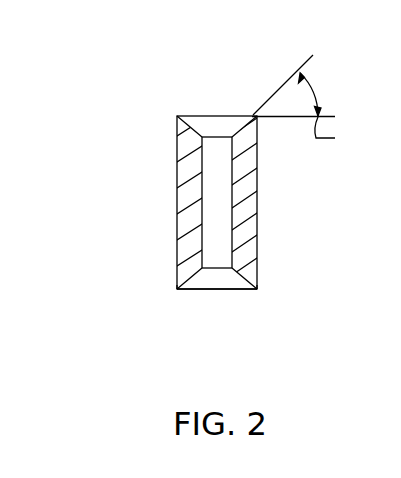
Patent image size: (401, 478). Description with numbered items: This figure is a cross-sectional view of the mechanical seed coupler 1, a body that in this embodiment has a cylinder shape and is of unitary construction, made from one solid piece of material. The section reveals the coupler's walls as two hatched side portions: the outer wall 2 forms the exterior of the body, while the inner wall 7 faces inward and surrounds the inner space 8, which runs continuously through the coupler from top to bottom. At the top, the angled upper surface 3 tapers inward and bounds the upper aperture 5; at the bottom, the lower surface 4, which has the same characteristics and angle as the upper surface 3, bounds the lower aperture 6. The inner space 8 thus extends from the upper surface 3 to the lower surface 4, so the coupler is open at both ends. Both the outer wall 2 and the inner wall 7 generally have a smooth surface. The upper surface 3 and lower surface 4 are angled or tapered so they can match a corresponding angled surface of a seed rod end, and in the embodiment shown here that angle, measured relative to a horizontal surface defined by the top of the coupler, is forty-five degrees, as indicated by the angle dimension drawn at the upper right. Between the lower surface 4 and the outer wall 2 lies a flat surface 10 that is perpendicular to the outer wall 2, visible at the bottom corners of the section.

The mechanical seed coupler 1 is at (163, 192).
The outer wall 2 is at (177, 228).
The upper surface 3 is at (190, 115).
The lower surface 4 is at (192, 274).
The upper aperture 5 is at (218, 108).
The lower aperture 6 is at (210, 292).
The inner wall 7 is at (202, 237).
The inner space 8 is at (216, 197).
The flat surface 10 is at (178, 290).